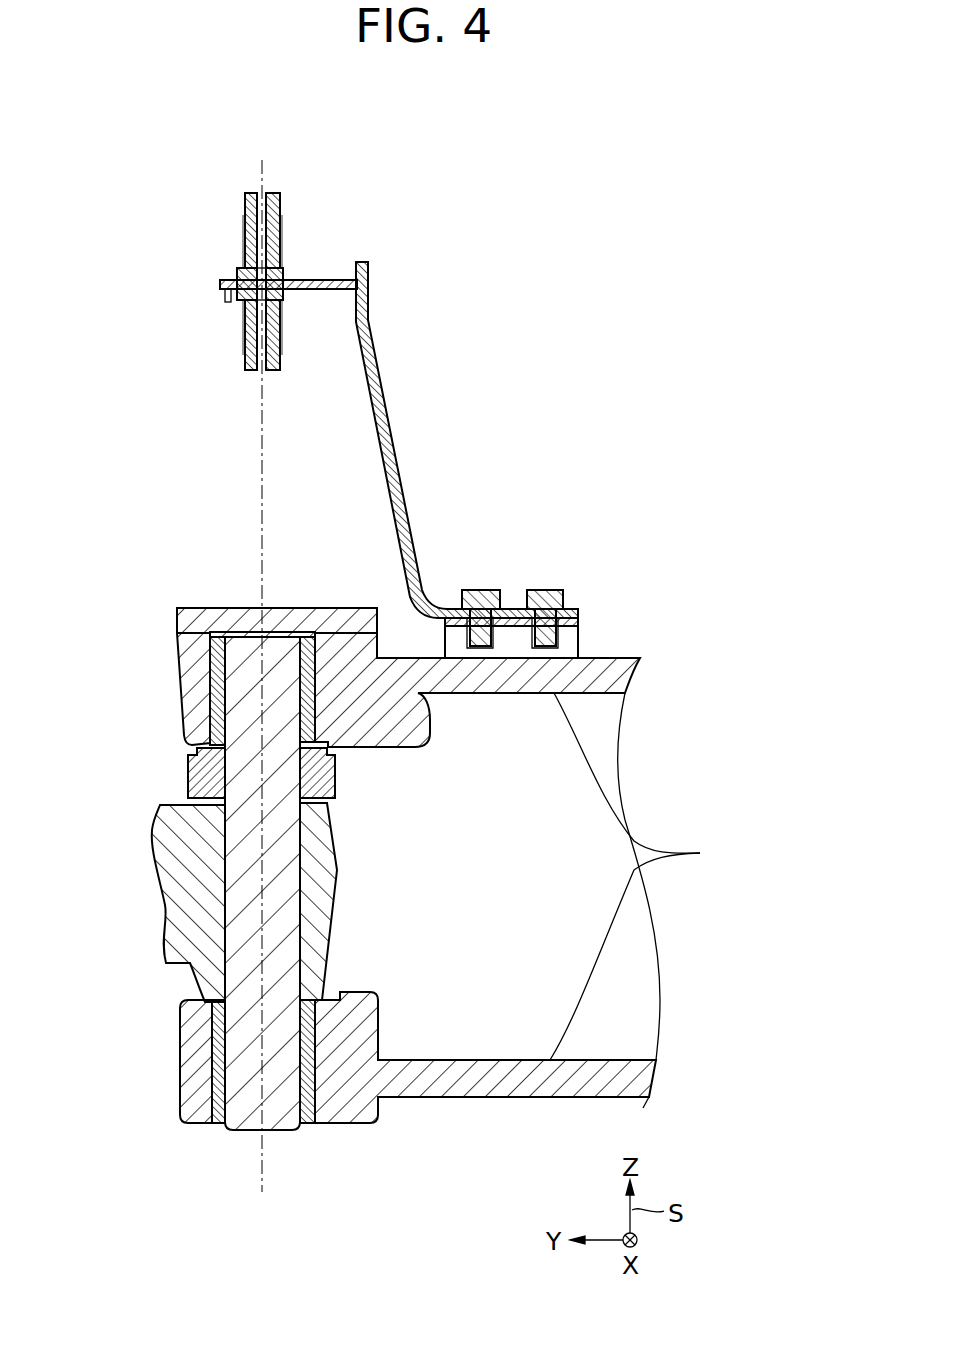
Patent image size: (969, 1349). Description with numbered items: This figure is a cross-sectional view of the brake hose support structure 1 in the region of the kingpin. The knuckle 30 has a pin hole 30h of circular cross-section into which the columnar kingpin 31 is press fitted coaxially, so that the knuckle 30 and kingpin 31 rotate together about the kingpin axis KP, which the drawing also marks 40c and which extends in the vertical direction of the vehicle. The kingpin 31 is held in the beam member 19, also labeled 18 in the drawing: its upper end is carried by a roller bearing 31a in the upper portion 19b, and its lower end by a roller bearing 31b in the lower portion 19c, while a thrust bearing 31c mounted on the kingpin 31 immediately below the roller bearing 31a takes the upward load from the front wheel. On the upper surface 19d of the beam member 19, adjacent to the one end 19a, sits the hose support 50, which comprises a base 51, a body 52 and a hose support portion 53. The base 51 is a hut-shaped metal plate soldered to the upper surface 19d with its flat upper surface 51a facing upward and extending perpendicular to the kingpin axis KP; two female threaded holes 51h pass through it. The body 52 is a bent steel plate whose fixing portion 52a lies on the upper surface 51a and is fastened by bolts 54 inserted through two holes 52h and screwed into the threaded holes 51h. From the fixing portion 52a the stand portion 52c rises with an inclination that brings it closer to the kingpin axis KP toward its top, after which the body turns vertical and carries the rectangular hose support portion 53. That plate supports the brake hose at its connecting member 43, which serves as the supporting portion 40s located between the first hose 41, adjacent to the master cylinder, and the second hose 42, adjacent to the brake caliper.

The brake hose support structure 1 is at (652, 168).
The frame 18 is at (640, 860).
The beam member 19 is at (481, 865).
The one end of the beam member 19a is at (447, 709).
The upper portion of the beam member 19b is at (638, 656).
The lower portion of the beam member 19c is at (330, 1022).
The upper surface of the beam member 19d is at (447, 709).
The knuckle 30 is at (212, 904).
The pin hole 30h is at (168, 968).
The kingpin 31 is at (274, 1132).
The roller bearing 31a is at (306, 686).
The roller bearing 31b is at (217, 1128).
The thrust bearing 31c is at (313, 765).
The rotation axis 40c is at (256, 492).
The supporting portion 40s is at (218, 235).
The first hose 41 is at (278, 210).
The second hose 42 is at (277, 358).
The connecting member 43 is at (216, 285).
The hose support 50 is at (452, 414).
The base 51 is at (535, 627).
The upper surface of the base 51a is at (535, 627).
The female threaded holes 51h is at (573, 651).
The body 52 is at (489, 440).
The fixing portion 52a is at (489, 440).
The stand portion 52c is at (384, 368).
The holes 52h is at (466, 592).
The hose support portion 53 is at (336, 282).
The bolts 54 is at (530, 553).
The kingpin axis KP is at (187, 676).